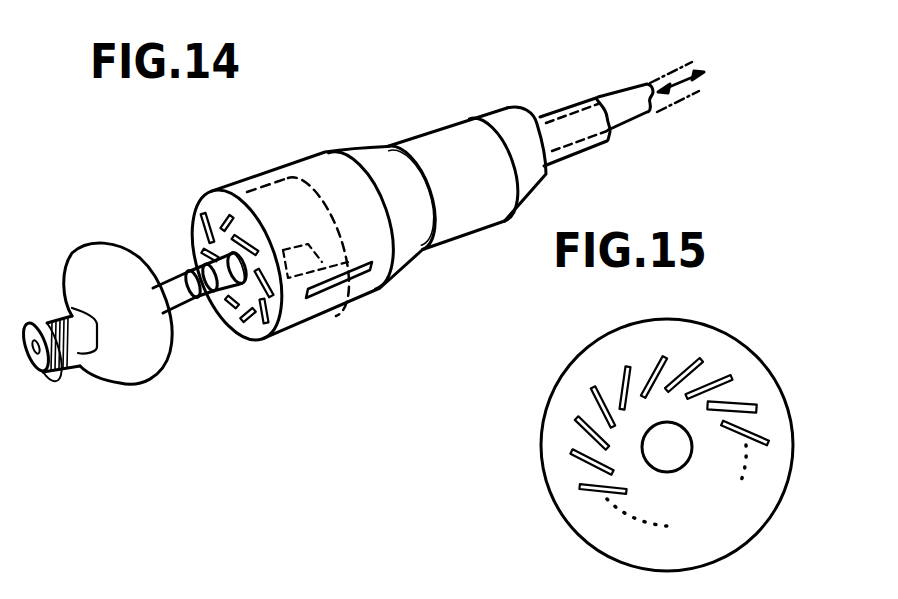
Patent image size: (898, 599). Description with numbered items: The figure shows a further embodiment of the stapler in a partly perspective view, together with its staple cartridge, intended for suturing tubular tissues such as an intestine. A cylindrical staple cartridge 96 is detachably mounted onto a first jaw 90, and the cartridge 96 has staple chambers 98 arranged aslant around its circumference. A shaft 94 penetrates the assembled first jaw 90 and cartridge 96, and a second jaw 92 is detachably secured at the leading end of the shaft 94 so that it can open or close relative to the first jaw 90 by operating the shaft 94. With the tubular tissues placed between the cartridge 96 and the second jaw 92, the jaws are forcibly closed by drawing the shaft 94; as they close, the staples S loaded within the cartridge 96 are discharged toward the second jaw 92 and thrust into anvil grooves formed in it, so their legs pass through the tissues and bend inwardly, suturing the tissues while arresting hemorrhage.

In FIG. 14, the first jaw 90 is at (371, 165).
In FIG. 14, the second jaw 92 is at (148, 364).
In FIG. 14, the shaft 94 is at (162, 292).
In FIG. 14, the cylindrical staple cartridge 96 is at (253, 340).
In FIG. 15, the cylindrical staple cartridge 96 is at (617, 545).
In FIG. 14, the staple chambers 98 is at (227, 220).
In FIG. 15, the staple chambers 98 is at (750, 404).
In FIG. 14, the staples S is at (335, 266).